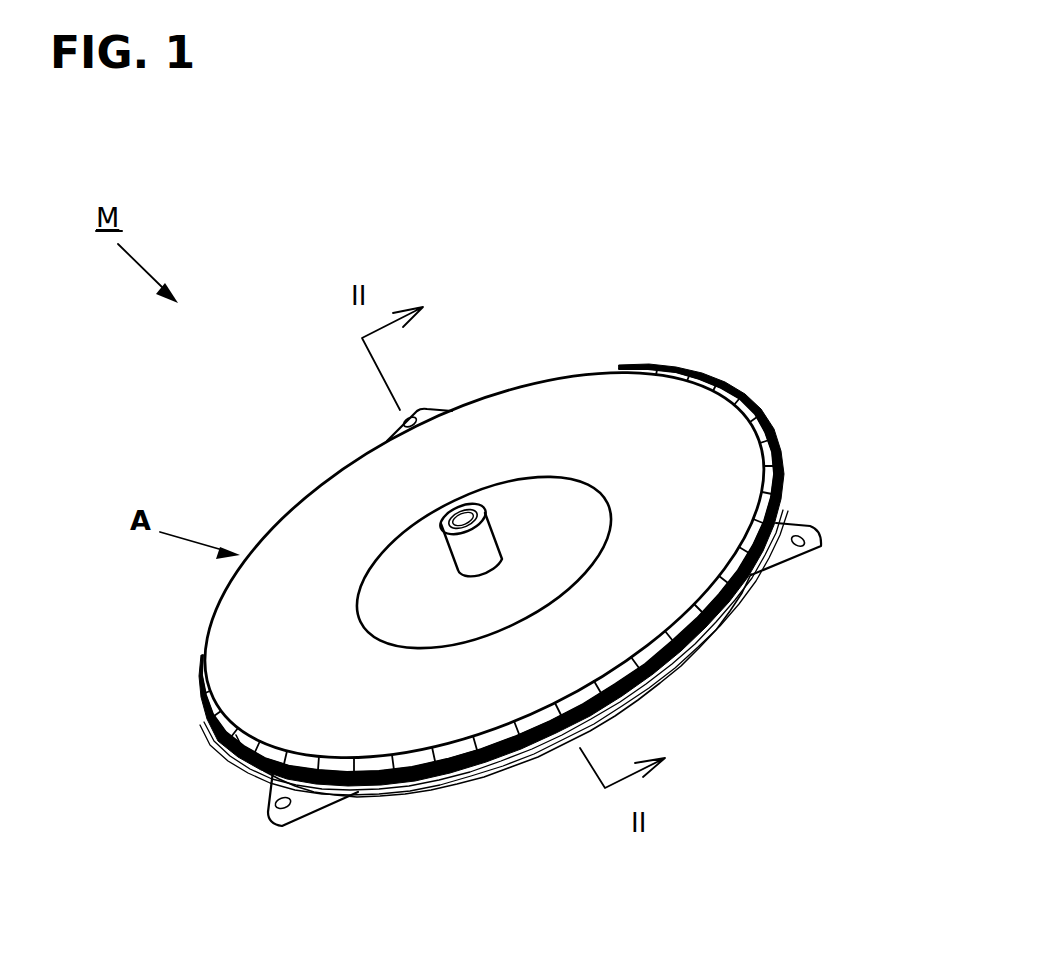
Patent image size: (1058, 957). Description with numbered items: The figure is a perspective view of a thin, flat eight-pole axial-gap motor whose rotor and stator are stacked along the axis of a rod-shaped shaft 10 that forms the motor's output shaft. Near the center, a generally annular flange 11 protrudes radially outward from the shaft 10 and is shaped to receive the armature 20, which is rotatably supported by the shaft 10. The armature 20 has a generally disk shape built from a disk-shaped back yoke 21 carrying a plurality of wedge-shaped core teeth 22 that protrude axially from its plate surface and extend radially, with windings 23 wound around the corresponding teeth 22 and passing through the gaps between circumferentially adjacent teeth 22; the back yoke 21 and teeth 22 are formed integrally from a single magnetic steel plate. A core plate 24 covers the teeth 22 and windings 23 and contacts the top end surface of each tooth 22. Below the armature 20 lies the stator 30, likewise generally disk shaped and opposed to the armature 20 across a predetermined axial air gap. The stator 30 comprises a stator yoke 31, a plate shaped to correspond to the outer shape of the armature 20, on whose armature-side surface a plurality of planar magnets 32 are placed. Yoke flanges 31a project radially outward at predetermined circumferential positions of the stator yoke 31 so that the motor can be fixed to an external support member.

The shaft 10 is at (497, 527).
The flange 11 is at (400, 568).
The armature 20 is at (194, 730).
The back yoke 21 is at (585, 398).
The core teeth 22 is at (771, 452).
The windings 23 is at (778, 457).
The core plate 24 is at (795, 525).
The stator 30 is at (234, 778).
The stator yoke 31 is at (722, 618).
The yoke flanges 31a is at (773, 577).
The planar magnets 32 is at (600, 707).